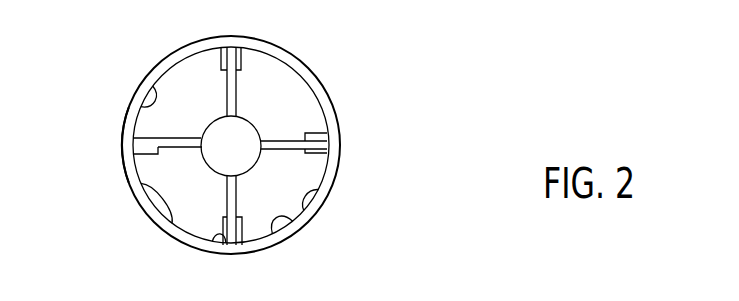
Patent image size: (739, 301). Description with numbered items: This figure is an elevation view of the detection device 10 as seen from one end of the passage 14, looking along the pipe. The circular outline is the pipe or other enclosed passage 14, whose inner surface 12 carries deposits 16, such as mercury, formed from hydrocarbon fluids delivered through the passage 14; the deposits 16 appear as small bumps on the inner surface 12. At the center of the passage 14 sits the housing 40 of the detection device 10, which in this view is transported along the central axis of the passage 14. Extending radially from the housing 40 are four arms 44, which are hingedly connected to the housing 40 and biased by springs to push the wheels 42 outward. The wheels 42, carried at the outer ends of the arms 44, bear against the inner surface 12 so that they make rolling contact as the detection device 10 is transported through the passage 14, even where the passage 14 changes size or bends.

The detection device 10 is at (276, 74).
The inner surface 12 is at (135, 110).
The passage 14 is at (166, 58).
The deposits 16 is at (153, 205).
The housing 40 is at (205, 162).
The wheels 42 is at (239, 46).
The arms 44 is at (222, 87).